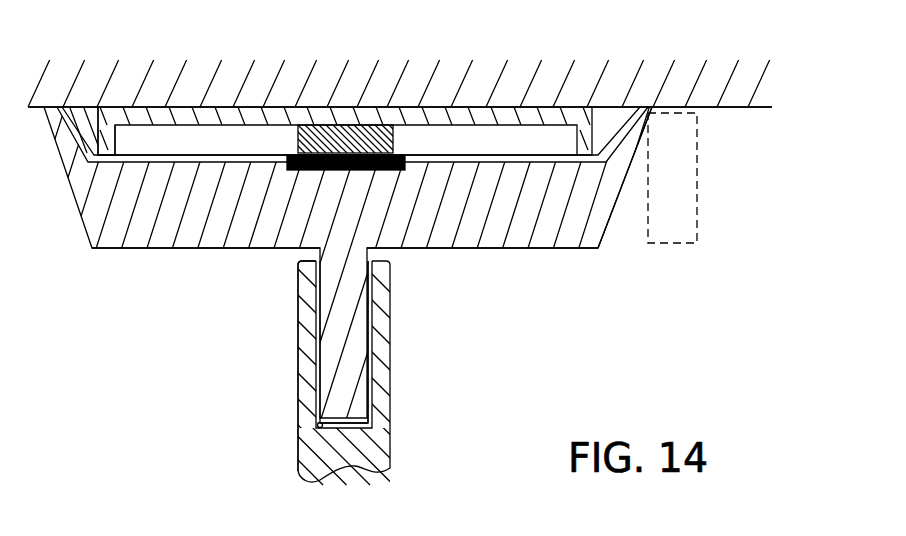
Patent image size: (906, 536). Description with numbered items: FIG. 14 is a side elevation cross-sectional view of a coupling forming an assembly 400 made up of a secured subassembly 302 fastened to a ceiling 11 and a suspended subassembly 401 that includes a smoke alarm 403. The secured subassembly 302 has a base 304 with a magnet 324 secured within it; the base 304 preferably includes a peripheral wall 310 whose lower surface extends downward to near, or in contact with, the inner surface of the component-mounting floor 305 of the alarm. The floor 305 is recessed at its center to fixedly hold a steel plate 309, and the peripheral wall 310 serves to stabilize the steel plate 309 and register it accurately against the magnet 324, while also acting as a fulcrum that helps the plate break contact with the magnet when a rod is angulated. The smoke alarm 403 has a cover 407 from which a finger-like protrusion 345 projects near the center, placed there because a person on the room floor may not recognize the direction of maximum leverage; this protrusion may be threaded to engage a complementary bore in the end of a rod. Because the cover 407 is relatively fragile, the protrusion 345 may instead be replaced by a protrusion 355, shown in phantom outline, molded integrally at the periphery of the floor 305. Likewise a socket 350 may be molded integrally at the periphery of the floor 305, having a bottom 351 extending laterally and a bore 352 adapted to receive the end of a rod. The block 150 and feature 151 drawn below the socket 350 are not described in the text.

The ceiling 11 is at (247, 97).
The secured subassembly 302 is at (540, 99).
The base 304 is at (117, 115).
The peripheral wall 310 is at (97, 130).
The magnet 324 is at (395, 143).
The steel plate 309 is at (313, 173).
The component-mounting floor 305 is at (135, 163).
The suspended subassembly 401 is at (80, 235).
The assembly 400 is at (162, 283).
The cover 407 is at (520, 249).
The smoke alarm 403 is at (573, 250).
The protrusion 355 is at (697, 167).
The support block 150 is at (388, 437).
The socket 350 is at (300, 352).
The bore 352 is at (317, 262).
The finger-like protrusion 345 is at (373, 328).
The bottom 351 is at (353, 422).
The corner recess 151 is at (318, 428).